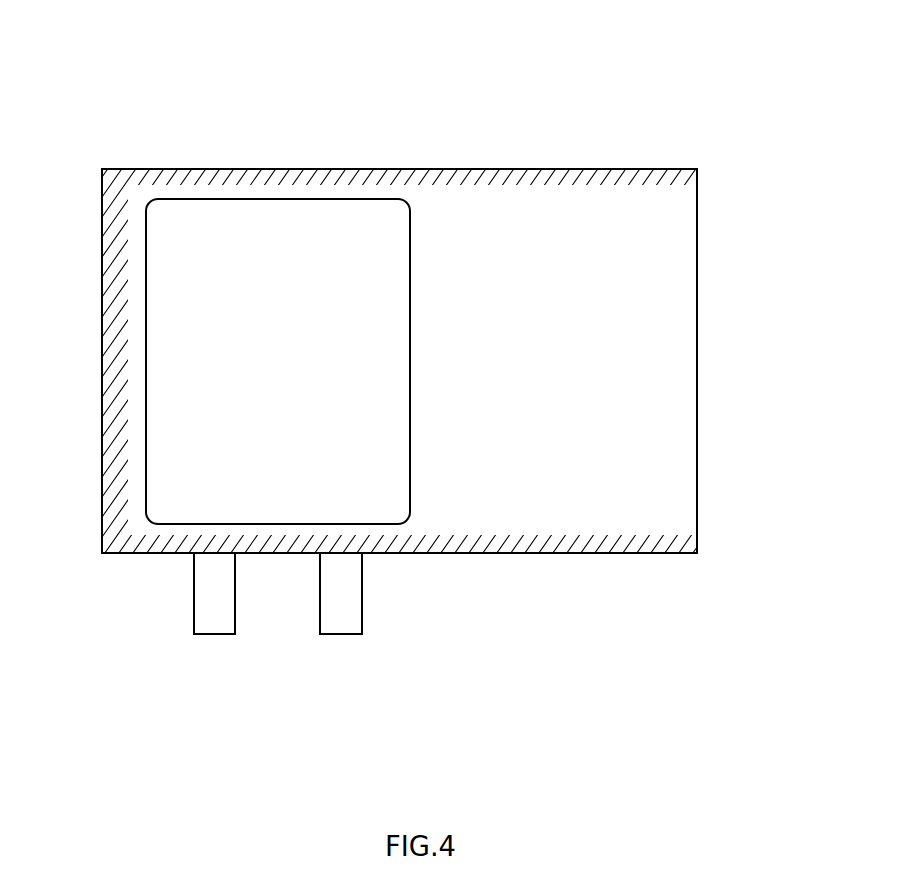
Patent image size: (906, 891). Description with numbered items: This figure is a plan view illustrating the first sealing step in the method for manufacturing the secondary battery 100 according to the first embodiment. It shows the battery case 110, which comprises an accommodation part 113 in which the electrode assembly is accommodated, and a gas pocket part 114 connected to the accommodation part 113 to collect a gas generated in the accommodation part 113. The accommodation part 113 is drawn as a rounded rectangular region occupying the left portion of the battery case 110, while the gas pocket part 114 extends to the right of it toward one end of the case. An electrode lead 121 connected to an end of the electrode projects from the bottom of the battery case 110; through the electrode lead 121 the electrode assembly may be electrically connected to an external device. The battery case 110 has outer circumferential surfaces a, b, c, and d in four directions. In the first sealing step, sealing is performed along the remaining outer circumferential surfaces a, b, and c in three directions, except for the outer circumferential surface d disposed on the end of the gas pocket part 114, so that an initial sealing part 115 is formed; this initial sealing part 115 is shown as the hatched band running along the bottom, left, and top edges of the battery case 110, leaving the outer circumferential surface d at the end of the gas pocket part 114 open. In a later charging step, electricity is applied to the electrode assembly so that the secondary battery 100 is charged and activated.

The secondary battery 100 is at (781, 40).
The battery case 110 is at (682, 156).
The accommodation part 113 is at (173, 270).
The gas pocket part 114 is at (613, 438).
The initial sealing part 115 is at (518, 554).
The electrode lead 121 is at (218, 635).
The outer circumferential surface a is at (143, 554).
The outer circumferential surface b is at (113, 355).
The outer circumferential surface c is at (471, 175).
The outer circumferential surface d is at (686, 360).